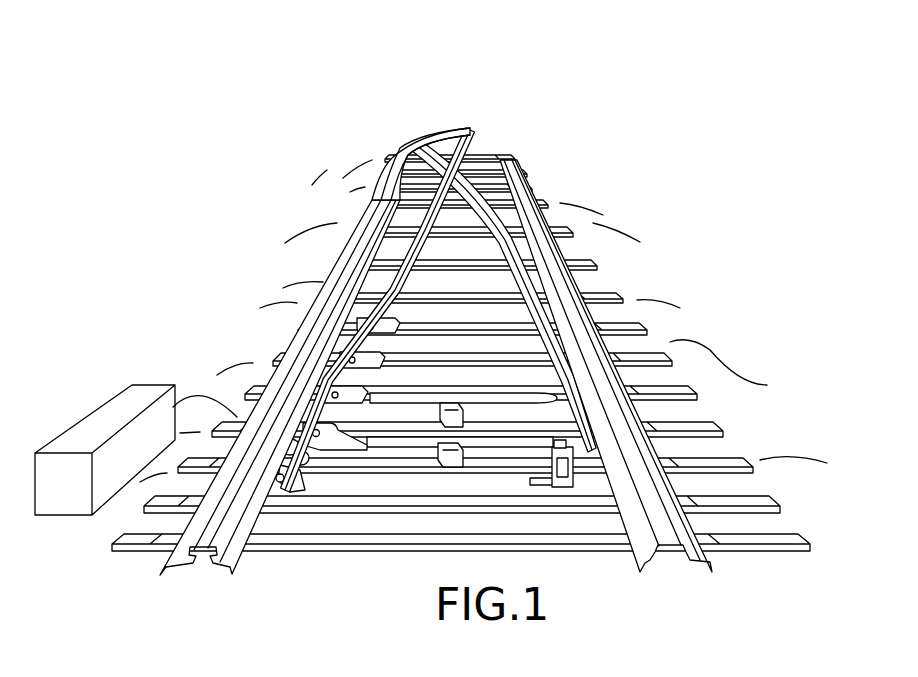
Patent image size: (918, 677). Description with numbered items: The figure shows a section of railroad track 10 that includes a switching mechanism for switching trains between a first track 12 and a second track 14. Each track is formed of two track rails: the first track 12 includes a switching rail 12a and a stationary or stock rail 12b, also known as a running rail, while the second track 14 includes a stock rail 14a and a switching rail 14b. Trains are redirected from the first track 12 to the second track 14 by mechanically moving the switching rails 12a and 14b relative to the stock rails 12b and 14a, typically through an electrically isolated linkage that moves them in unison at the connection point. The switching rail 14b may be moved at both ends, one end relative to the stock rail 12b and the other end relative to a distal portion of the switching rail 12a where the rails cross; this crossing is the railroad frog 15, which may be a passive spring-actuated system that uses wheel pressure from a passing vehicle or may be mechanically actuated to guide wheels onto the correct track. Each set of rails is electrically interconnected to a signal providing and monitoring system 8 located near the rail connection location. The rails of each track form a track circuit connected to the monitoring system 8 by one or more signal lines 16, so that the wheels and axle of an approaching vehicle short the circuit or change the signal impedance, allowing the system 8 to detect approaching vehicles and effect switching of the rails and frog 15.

The signal providing and monitoring system 8 is at (86, 372).
The section of railroad track 10 is at (655, 113).
The first track 12 is at (530, 146).
The switching rail 12a is at (474, 132).
The stock rail 12b is at (500, 138).
The second track 14 is at (370, 147).
The stock rail 14a is at (414, 133).
The switching rail 14b is at (456, 130).
The railroad frog 15 is at (520, 163).
The signal lines 16 is at (200, 398).